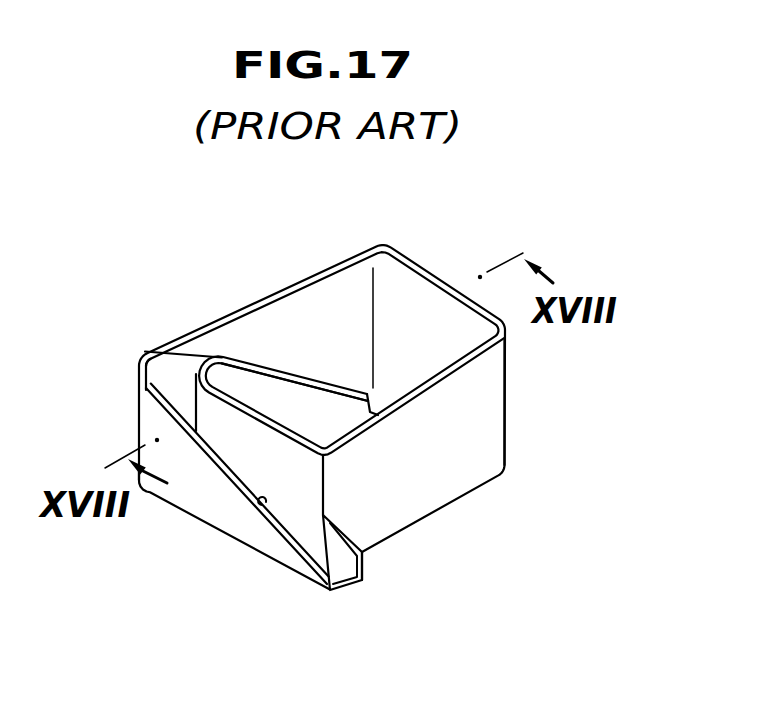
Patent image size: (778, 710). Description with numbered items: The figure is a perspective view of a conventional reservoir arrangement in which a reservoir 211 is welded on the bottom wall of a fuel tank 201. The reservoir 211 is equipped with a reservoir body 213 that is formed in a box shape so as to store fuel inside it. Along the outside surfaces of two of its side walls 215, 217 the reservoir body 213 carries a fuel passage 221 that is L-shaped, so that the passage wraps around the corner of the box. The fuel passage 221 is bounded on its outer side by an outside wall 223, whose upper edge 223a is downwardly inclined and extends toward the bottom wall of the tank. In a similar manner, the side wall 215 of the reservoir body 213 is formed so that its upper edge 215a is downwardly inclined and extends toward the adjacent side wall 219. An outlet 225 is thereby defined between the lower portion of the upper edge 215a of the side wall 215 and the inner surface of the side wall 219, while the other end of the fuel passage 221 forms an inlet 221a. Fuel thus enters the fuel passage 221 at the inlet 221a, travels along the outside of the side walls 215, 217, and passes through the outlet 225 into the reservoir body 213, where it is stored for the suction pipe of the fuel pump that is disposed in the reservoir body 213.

The fuel tank 201 is at (614, 456).
The reservoir 211 is at (505, 398).
The reservoir body 213 is at (317, 403).
The side wall 215 is at (256, 384).
The upper edge 215a is at (158, 355).
The side wall 217 is at (297, 513).
The side wall 219 is at (438, 302).
The fuel passage 221 is at (166, 378).
The inlet 221a is at (346, 571).
The outside wall 223 is at (212, 509).
The upper edge 223a is at (262, 505).
The outlet 225 is at (375, 410).